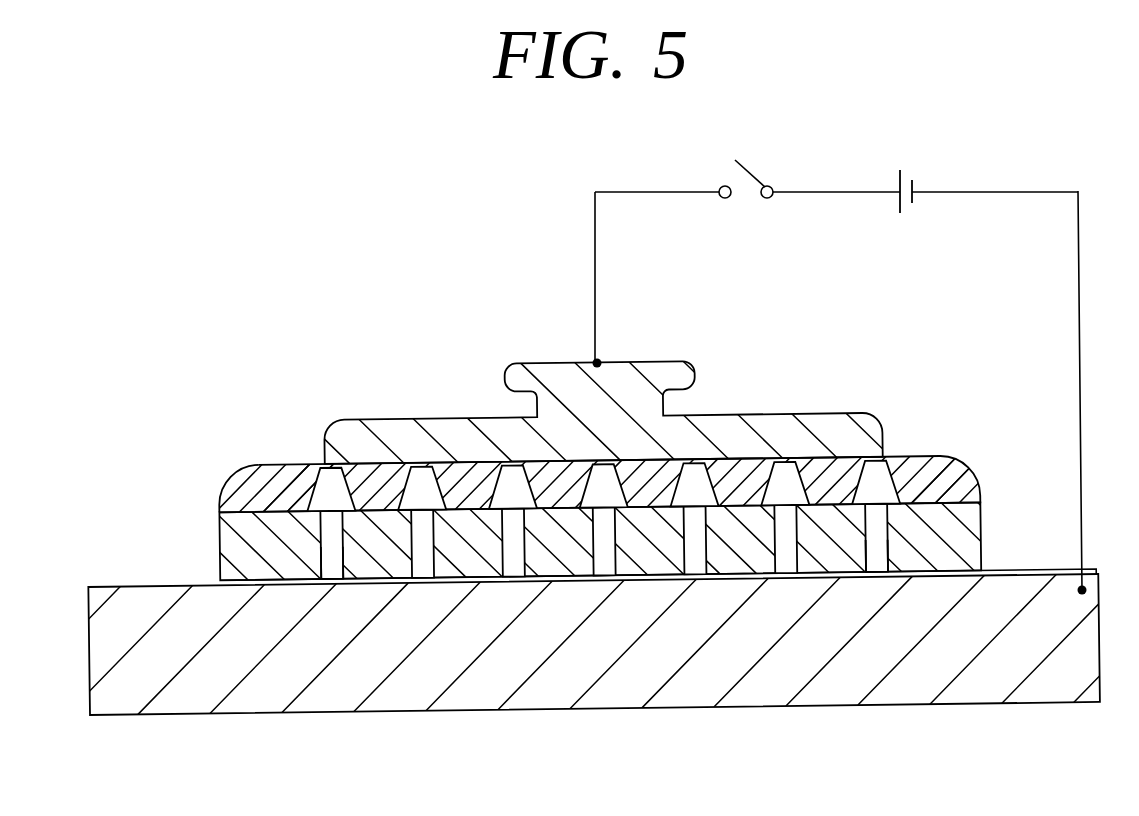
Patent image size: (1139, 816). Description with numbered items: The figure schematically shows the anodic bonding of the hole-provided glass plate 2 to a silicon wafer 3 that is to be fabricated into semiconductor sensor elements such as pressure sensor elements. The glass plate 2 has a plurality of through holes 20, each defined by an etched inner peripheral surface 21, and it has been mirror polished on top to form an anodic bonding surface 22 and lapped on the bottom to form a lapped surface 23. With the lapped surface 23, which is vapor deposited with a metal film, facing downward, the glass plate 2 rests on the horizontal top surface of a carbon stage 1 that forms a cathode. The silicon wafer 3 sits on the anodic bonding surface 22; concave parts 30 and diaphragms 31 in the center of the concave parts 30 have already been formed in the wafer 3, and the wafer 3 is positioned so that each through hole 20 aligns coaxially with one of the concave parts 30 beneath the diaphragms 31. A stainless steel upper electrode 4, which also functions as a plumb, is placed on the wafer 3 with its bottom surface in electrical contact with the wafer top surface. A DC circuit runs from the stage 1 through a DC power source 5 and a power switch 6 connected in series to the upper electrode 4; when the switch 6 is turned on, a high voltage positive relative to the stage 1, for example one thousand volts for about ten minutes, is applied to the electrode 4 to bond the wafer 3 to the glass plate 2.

The carbon stage 1 is at (982, 682).
The hole-provided glass plate 2 is at (970, 553).
The silicon wafer 3 is at (962, 482).
The upper electrode 4 is at (822, 428).
The DC power source 5 is at (907, 202).
The power switch 6 is at (747, 198).
The through hole 20 is at (333, 533).
The inner peripheral surface 21 is at (340, 559).
The anodic bonding surface 22 is at (252, 497).
The lapped surface 23 is at (270, 587).
The concave part 30 is at (310, 493).
The diaphragm 31 is at (328, 465).